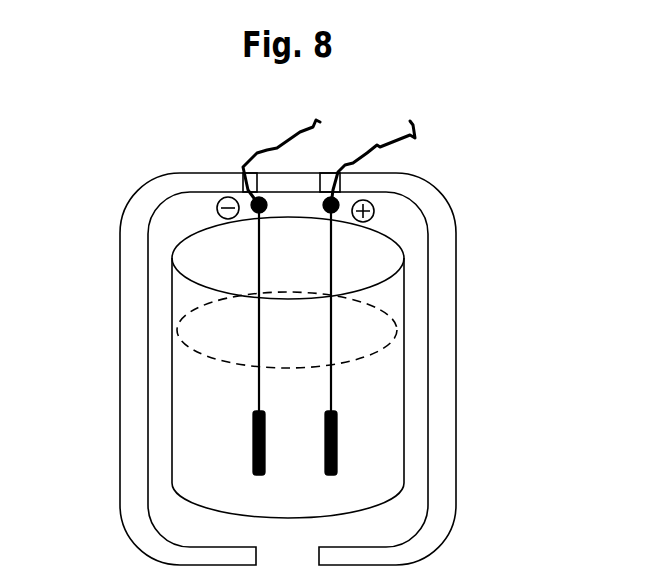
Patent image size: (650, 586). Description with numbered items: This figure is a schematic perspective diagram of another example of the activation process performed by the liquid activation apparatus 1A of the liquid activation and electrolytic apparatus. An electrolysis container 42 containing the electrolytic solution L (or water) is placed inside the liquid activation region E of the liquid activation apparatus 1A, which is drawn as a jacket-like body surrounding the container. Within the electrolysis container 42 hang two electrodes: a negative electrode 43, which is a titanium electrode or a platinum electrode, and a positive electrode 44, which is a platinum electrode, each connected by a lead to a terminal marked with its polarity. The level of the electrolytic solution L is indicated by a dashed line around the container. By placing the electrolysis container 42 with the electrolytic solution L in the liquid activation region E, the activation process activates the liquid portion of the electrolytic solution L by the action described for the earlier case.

The liquid activation apparatus 1A is at (142, 422).
The liquid activation region E is at (163, 365).
The electrolysis container 42 is at (405, 283).
The electrolytic solution L is at (405, 322).
The negative electrode 43 is at (253, 450).
The positive electrode 44 is at (337, 438).